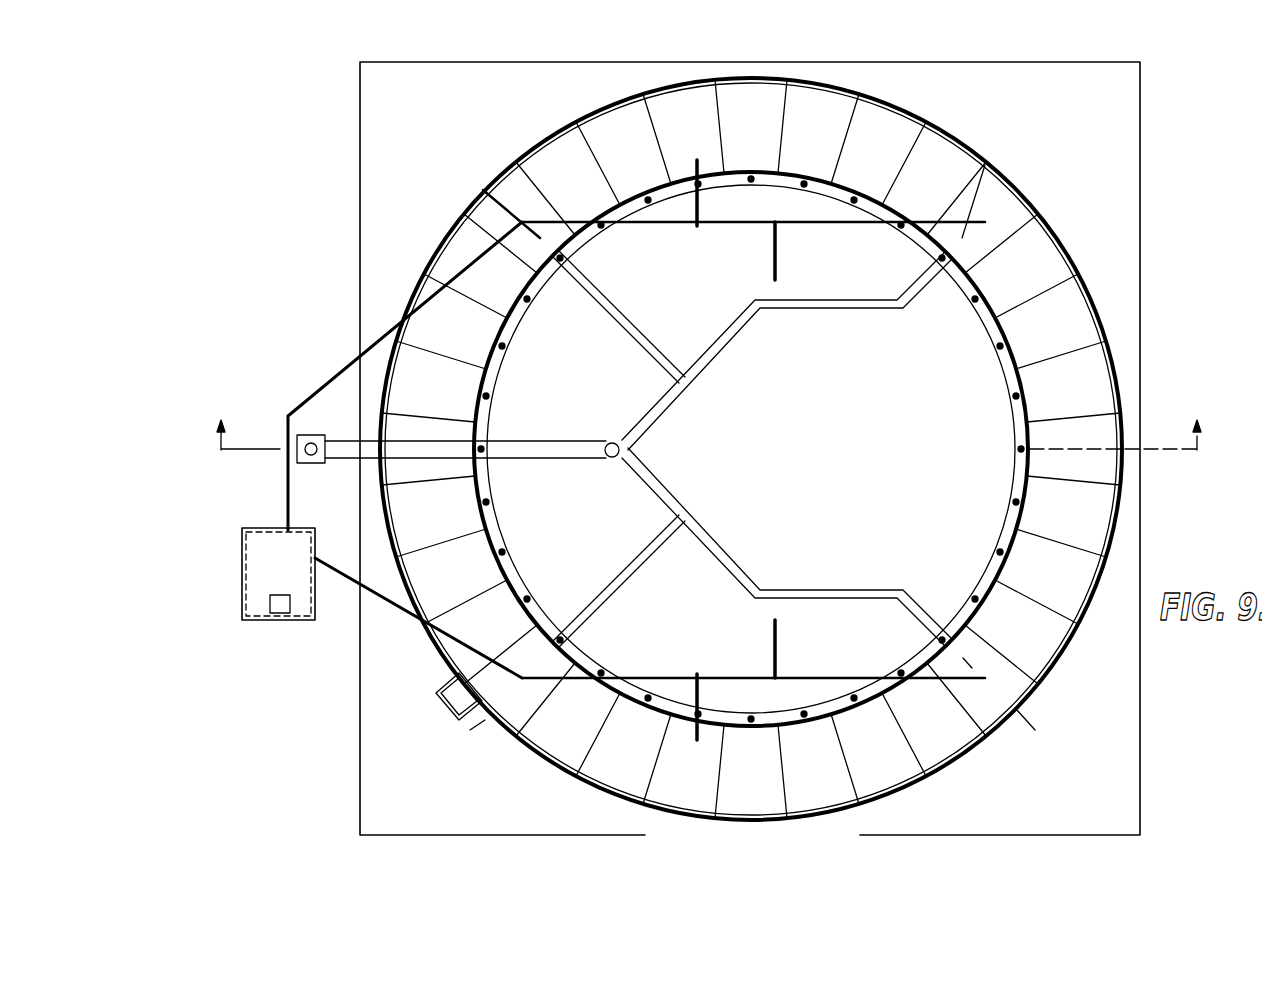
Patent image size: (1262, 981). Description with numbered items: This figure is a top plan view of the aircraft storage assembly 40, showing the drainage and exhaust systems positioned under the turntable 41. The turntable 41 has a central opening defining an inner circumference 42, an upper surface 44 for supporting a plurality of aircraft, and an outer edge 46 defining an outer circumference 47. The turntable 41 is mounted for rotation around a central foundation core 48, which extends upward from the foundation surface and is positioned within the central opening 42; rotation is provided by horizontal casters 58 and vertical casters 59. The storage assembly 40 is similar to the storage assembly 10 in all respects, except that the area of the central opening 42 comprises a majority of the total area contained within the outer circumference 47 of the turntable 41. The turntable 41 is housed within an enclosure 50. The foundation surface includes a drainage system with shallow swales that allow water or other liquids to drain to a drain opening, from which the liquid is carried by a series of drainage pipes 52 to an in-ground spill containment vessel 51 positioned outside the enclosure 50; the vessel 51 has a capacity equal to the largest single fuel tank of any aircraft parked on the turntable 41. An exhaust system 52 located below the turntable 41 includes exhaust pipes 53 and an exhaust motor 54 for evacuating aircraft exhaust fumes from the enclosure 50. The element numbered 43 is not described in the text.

The storage assembly 10 is at (710, 456).
The aircraft storage assembly 40 is at (330, 171).
The turntable 41 is at (560, 162).
The inner circumference 42 is at (1012, 392).
The inner rail 43 is at (1023, 367).
The upper surface 44 is at (942, 188).
The outer edge 46 is at (920, 162).
The outer circumference 47 is at (610, 105).
The central foundation core 48 is at (982, 512).
The enclosure 50 is at (1140, 118).
The in-ground spill containment vessel 51 is at (242, 565).
The drainage pipes 52 is at (767, 222).
The exhaust pipes 53 is at (547, 447).
The exhaust motor 54 is at (305, 436).
The horizontal casters 58 is at (1023, 363).
The vertical casters 59 is at (512, 167).